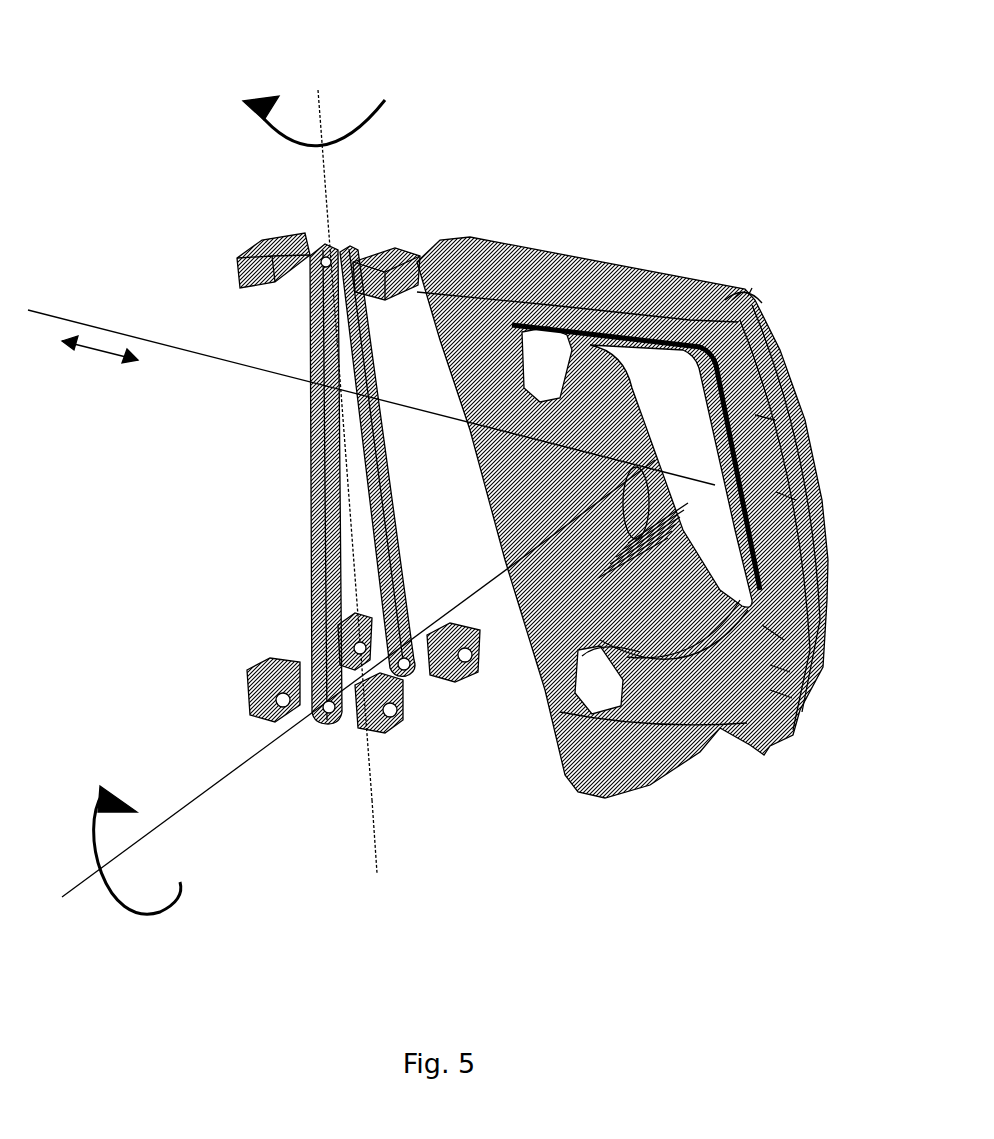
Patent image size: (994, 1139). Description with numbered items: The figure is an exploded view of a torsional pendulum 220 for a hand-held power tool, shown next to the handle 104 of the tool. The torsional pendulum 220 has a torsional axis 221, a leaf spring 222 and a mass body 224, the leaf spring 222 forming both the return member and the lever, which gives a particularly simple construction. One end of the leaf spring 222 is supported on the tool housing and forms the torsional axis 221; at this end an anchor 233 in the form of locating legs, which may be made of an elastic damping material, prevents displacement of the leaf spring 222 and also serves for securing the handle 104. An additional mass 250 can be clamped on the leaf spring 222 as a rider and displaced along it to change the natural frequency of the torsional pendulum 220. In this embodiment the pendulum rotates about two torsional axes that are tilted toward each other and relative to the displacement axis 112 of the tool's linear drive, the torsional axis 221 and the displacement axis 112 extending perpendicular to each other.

The handle 104 is at (662, 300).
The displacement axis 112 is at (65, 313).
The torsional pendulum 220 is at (215, 140).
The torsional axis 221 is at (188, 807).
The leaf spring 222 is at (318, 528).
The mass body 224 is at (398, 252).
The anchor 233 is at (402, 723).
The additional mass 250 is at (375, 835).